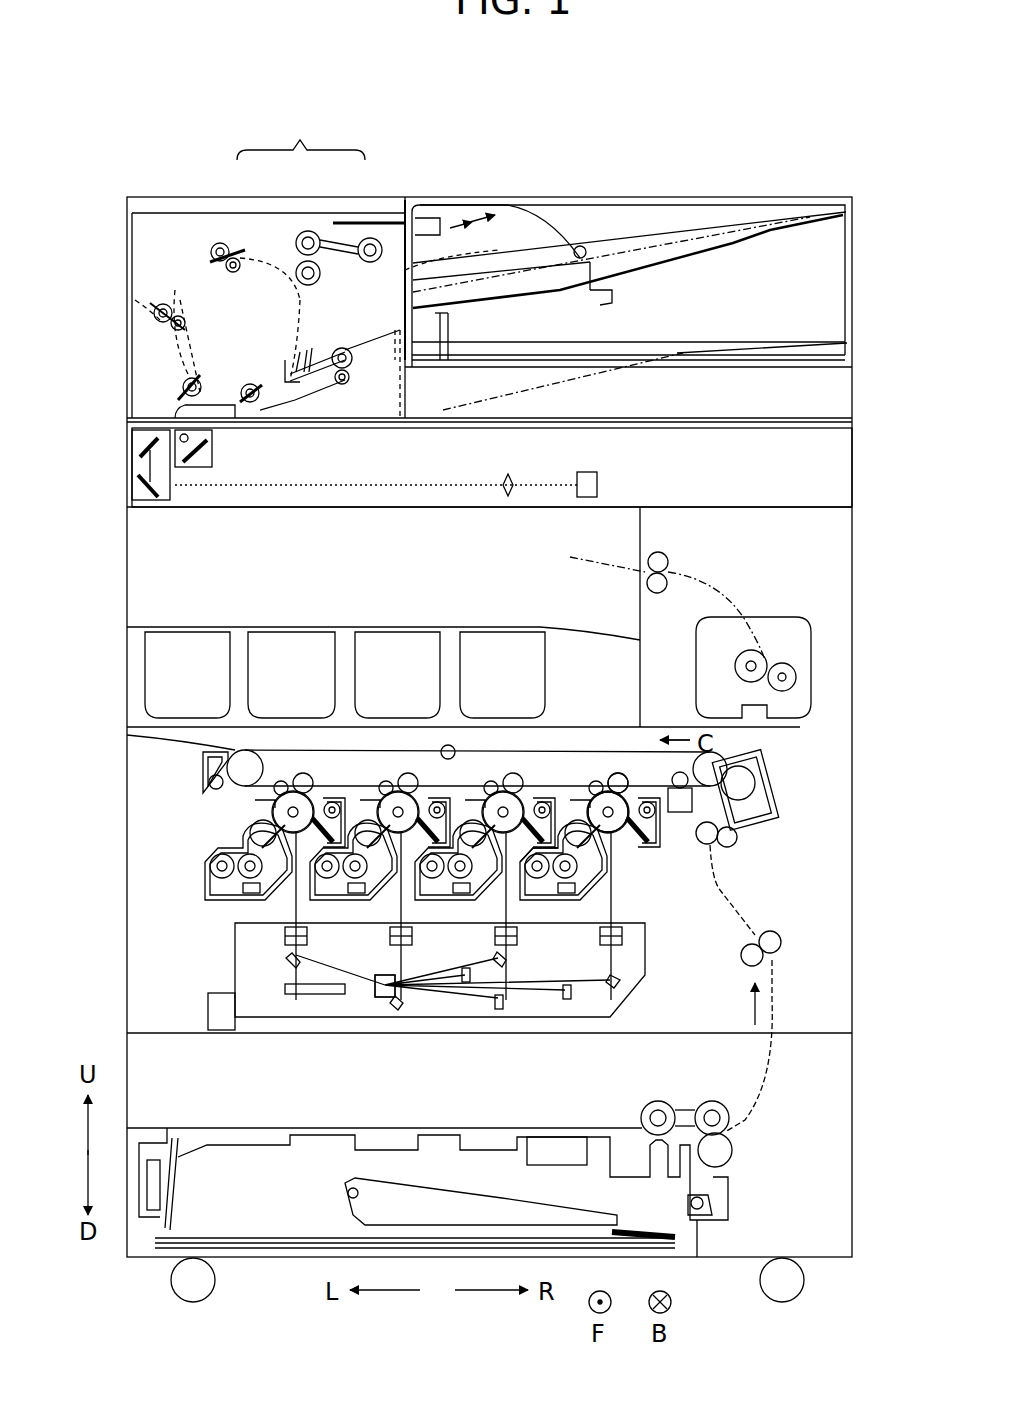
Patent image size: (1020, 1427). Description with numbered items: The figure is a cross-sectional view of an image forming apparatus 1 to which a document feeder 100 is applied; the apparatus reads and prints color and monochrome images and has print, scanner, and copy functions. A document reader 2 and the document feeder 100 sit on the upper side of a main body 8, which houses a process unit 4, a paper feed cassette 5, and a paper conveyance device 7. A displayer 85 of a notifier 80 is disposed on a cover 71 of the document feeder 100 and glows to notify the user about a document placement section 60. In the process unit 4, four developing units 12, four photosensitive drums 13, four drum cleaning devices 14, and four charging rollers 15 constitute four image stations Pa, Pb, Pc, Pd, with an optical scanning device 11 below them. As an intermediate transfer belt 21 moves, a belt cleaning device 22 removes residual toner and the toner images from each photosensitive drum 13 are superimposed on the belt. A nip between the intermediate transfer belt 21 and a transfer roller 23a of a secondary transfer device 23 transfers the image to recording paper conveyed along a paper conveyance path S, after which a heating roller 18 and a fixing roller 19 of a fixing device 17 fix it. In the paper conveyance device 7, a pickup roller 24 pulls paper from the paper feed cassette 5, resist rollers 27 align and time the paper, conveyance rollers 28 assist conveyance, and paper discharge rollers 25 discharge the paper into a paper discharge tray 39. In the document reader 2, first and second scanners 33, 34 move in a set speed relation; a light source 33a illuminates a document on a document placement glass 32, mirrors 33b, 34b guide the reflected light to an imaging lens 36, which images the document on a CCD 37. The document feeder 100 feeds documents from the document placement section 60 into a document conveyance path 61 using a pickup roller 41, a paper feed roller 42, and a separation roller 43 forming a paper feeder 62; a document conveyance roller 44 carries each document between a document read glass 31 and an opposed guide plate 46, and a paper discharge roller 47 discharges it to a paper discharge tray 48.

The image forming apparatus 1 is at (483, 165).
The document reader 2 is at (866, 470).
The process unit 4 is at (205, 836).
The paper feed cassette 5 is at (372, 1127).
The paper conveyance device 7 is at (793, 977).
The main body 8 is at (127, 597).
The optical scanning device 11 is at (645, 993).
The developing unit 12 is at (530, 925).
The photosensitive drum 13 is at (595, 795).
The drum cleaning device 14 is at (640, 770).
The charging roller 15 is at (588, 848).
The fixing device 17 is at (773, 667).
The heating roller 18 is at (735, 664).
The fixing roller 19 is at (797, 678).
The intermediate transfer belt 21 is at (235, 752).
The belt cleaning device 22 is at (205, 775).
The secondary transfer device 23 is at (777, 780).
The transfer roller 23a is at (765, 795).
The pickup roller 24 is at (645, 1105).
The paper discharge roller 25 is at (665, 555).
The resist roller 27 is at (740, 840).
The conveyance roller 28 is at (780, 932).
The document read glass 31 is at (128, 418).
The document placement glass 32 is at (290, 372).
The first scanner 33 is at (230, 486).
The light source 33a is at (215, 437).
The mirror 33b is at (215, 460).
The second scanner 34 is at (112, 505).
The mirror 34b is at (133, 445).
The imaging lens 36 is at (508, 497).
The charge coupled device (CCD) 37 is at (598, 485).
The paper discharge tray 39 is at (248, 626).
The pickup roller 41 is at (365, 238).
The paper feed roller 42 is at (306, 260).
The separation roller 43 is at (300, 232).
The document conveyance roller 44 is at (218, 243).
The opposed guide plate 46 is at (205, 384).
The paper discharge roller 47 is at (415, 400).
The paper discharge tray 48 is at (673, 356).
The document placement section 60 is at (643, 212).
The document conveyance path 61 is at (188, 275).
The paper feeder 62 is at (309, 197).
The cover 71 is at (150, 207).
The notifier 80 is at (395, 222).
The displayer 85 is at (429, 249).
The document feeder 100 is at (716, 190).
The image station Pa is at (628, 778).
The image station Pb is at (528, 778).
The image station Pc is at (423, 778).
The image station Pd is at (318, 778).
The paper conveyance path S is at (720, 883).